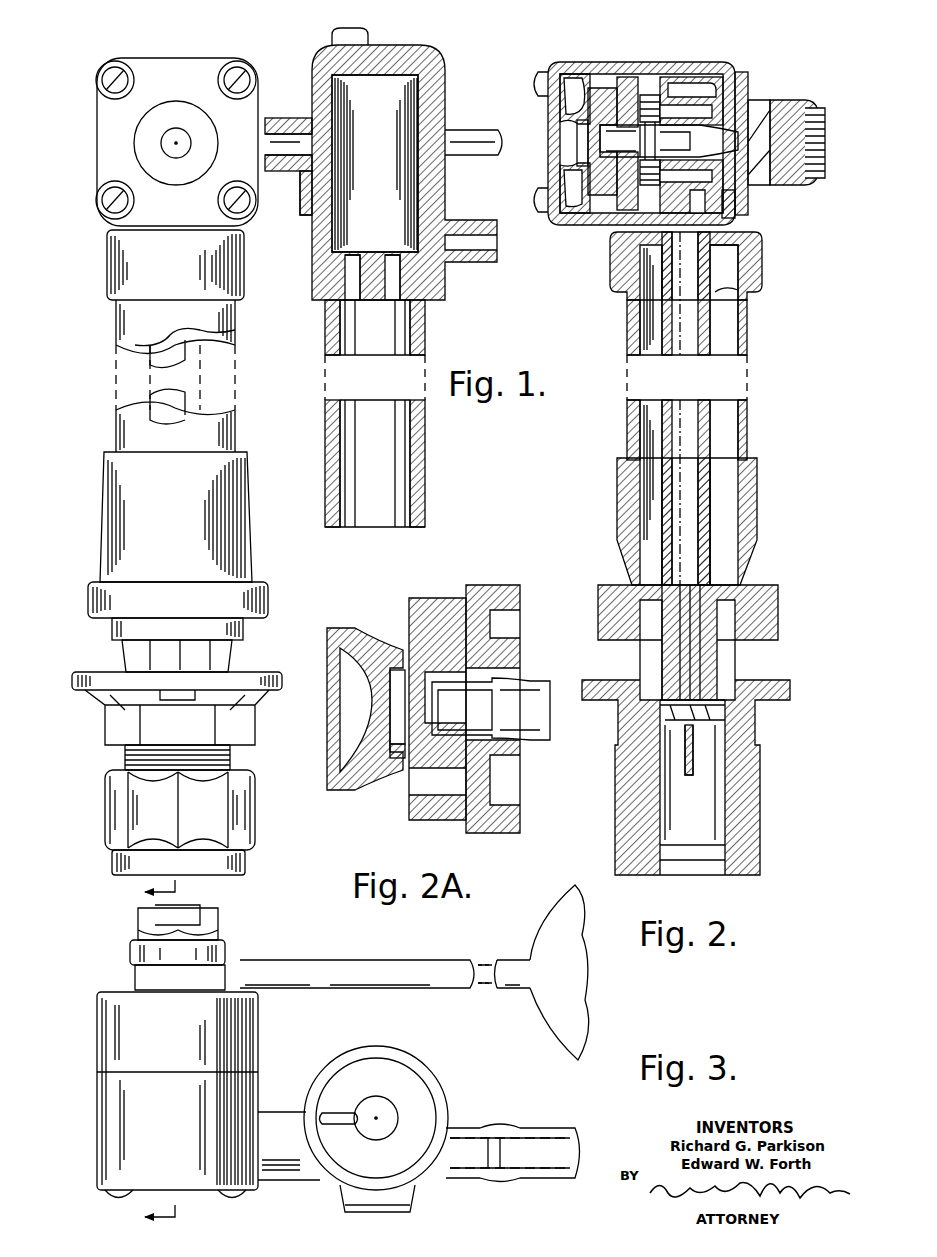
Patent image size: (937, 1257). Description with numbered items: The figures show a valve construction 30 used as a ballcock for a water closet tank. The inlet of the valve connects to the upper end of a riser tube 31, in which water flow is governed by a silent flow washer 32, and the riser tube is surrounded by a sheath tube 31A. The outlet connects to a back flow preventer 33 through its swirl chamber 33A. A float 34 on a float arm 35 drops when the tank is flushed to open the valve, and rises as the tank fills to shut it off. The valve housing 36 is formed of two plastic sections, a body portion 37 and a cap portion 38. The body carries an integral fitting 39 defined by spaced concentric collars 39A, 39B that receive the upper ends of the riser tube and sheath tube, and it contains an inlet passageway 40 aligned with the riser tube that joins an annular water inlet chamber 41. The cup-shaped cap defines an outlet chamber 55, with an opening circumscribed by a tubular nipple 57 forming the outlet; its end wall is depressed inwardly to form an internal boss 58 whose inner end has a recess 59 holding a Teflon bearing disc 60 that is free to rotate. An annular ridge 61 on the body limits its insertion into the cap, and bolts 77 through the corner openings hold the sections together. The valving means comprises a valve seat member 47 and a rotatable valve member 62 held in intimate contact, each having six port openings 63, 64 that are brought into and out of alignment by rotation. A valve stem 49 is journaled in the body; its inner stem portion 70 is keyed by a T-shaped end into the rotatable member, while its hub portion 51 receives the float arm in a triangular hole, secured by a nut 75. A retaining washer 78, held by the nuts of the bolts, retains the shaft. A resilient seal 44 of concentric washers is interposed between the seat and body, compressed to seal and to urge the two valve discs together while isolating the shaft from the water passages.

In FIG. 1, the valve construction 30 is at (180, 54).
In FIG. 2, the valve construction 30 is at (590, 54).
In FIG. 3, the valve construction 30 is at (240, 1096).
In FIG. 1, the riser tube 31 is at (205, 396).
In FIG. 2, the riser tube 31 is at (662, 329).
In FIG. 1, the sheath tube 31A is at (235, 424).
In FIG. 2, the sheath tube 31A is at (747, 418).
In FIG. 2, the silent flow washer 32 is at (735, 755).
In FIG. 1, the back flow preventer 33 is at (448, 70).
In FIG. 3, the back flow preventer 33 is at (437, 1061).
In FIG. 1, the swirl chamber 33A is at (328, 60).
In FIG. 3, the float 34 is at (556, 1045).
In FIG. 1, the float arm 35 is at (495, 128).
In FIG. 2, the float arm 35 is at (788, 98).
In FIG. 3, the float arm 35 is at (420, 958).
In FIG. 2, the valve housing 36 is at (685, 54).
In FIG. 2, the body portion 37 is at (745, 226).
In FIG. 2, the cap portion 38 is at (560, 222).
In FIG. 2, the fitting 39 is at (757, 262).
In FIG. 2, the collar 39A is at (757, 280).
In FIG. 2, the collar 39B is at (722, 292).
In FIG. 2, the inlet passageway 40 is at (640, 228).
In FIG. 2, the annular water inlet chamber 41 is at (692, 104).
In FIG. 2, the seal 44 is at (635, 77).
In FIG. 2, the valve seat member 47 is at (627, 77).
In FIG. 2A, the valve seat member 47 is at (520, 812).
In FIG. 2, the valve stem 49 is at (752, 132).
In FIG. 2, the hub portion 51 is at (738, 194).
In FIG. 2, the outlet chamber 55 is at (570, 106).
In FIG. 1, the tubular nipple 57 is at (282, 115).
In FIG. 2, the internal boss 58 is at (573, 198).
In FIG. 2A, the internal boss 58 is at (355, 641).
In FIG. 2A, the recess 59 is at (388, 704).
In FIG. 2, the bearing disc 60 is at (577, 144).
In FIG. 2A, the bearing disc 60 is at (396, 758).
In FIG. 2, the annular ridge 61 is at (671, 62).
In FIG. 2, the rotatable valve member 62 is at (596, 94).
In FIG. 2A, the rotatable valve member 62 is at (420, 820).
In FIG. 2A, the port openings 63 is at (500, 640).
In FIG. 2, the port openings 64 is at (590, 214).
In FIG. 2A, the port openings 64 is at (418, 782).
In FIG. 2, the valve stem inner portion 70 is at (669, 141).
In FIG. 2, the nut 75 is at (798, 104).
In FIG. 1, the bolts 77 is at (100, 68).
In FIG. 2, the bolts 77 is at (536, 84).
In FIG. 2, the retaining washer 78 is at (742, 94).